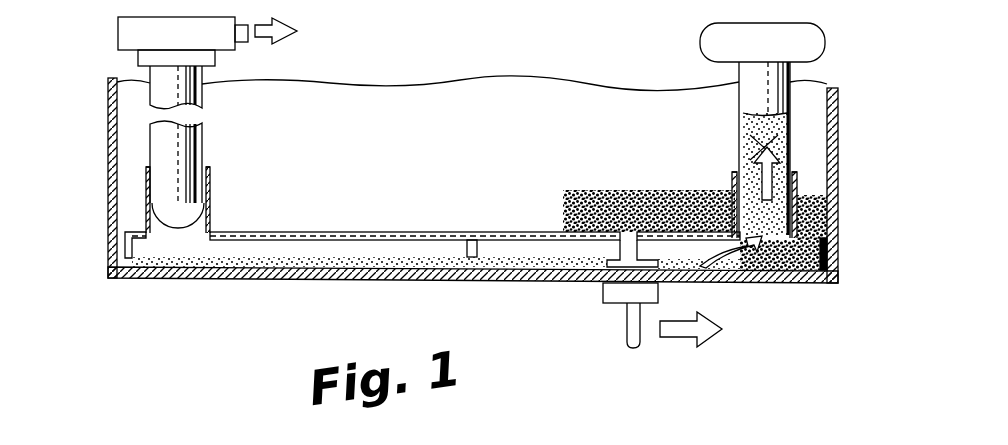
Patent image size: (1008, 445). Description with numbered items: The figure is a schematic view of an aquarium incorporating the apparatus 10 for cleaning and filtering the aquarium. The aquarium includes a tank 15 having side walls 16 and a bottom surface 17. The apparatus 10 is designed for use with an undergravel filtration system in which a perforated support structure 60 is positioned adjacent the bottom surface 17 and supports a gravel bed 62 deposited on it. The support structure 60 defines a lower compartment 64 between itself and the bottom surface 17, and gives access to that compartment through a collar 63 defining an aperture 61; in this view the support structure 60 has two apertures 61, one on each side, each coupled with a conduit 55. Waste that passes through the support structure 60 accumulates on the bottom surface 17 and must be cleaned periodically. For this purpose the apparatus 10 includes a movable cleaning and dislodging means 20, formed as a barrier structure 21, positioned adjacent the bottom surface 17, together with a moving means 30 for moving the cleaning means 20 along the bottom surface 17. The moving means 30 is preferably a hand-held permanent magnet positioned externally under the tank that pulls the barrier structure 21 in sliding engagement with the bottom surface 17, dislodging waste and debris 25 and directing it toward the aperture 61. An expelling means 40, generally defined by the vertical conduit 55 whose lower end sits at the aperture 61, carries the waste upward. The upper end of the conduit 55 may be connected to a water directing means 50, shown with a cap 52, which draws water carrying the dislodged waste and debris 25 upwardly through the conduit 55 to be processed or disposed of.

The apparatus 10 is at (465, 197).
The tank 15 is at (468, 198).
The side walls 16 is at (108, 160).
The bottom surface 17 is at (380, 268).
The cleaning and dislodging means 20 is at (606, 252).
The barrier structure 21 is at (613, 267).
The dislodged waste and debris 25 is at (690, 279).
The moving means 30 is at (620, 311).
The expelling means 40 is at (466, 123).
The water directing means 50 is at (118, 31).
The collar 52 is at (125, 38).
The conduit 55 is at (204, 145).
The perforated support structure 60 is at (325, 231).
The aperture 61 is at (827, 247).
The gravel bed 62 is at (612, 190).
The collar 63 is at (146, 195).
The lower compartment 64 is at (272, 262).